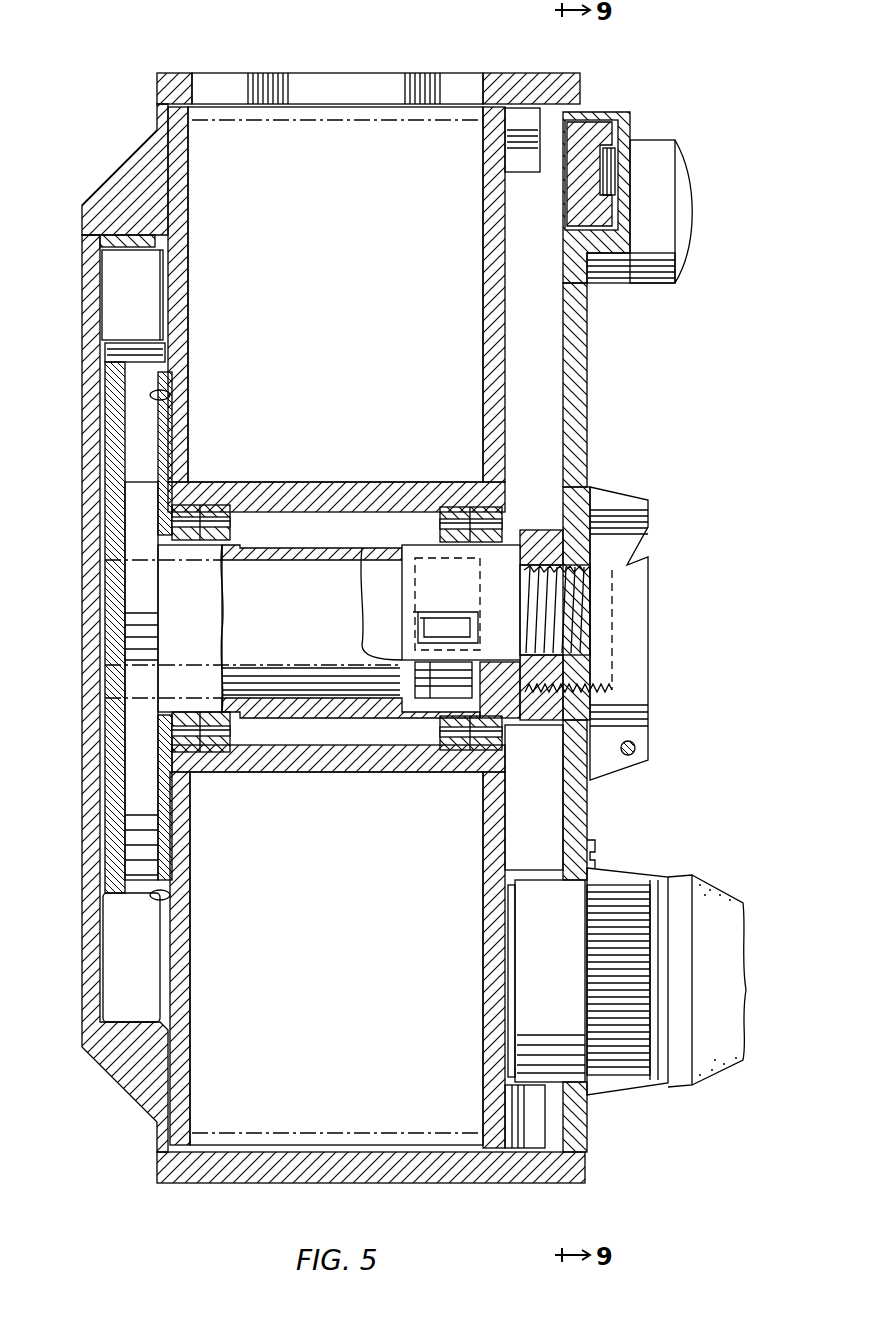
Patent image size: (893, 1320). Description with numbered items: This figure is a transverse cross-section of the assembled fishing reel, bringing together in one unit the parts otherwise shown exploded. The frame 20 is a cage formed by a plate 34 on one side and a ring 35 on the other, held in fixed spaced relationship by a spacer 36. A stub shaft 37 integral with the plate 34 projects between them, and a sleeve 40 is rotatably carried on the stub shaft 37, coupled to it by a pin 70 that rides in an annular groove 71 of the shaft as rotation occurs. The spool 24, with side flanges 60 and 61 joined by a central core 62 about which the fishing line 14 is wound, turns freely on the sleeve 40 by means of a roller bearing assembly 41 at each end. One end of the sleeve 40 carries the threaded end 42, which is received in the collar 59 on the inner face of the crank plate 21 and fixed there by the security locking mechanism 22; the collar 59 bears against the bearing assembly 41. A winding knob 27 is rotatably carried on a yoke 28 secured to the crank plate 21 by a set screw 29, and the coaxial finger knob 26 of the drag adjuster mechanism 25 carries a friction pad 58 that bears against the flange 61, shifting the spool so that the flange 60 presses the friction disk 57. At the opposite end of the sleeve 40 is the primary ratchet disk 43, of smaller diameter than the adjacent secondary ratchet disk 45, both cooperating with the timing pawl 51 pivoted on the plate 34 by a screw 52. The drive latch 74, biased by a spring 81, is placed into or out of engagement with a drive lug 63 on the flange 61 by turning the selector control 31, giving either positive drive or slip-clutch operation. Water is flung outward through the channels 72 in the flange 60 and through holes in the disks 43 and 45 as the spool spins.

The fishing line 14 is at (325, 125).
The frame 20 is at (130, 1098).
The crank plate 21 is at (598, 419).
The security locking mechanism 22 is at (665, 572).
The spool 24 is at (152, 128).
The drag adjuster mechanism 25 is at (676, 878).
The finger knob 26 is at (613, 888).
The winding knob 27 is at (715, 900).
The yoke 28 is at (645, 878).
The set screw 29 is at (593, 855).
The selector control screw 31 is at (690, 182).
The plate 34 is at (125, 245).
The ring 35 is at (565, 1178).
The spacer 36 is at (388, 78).
The stub shaft 37 is at (310, 642).
The sleeve 40 is at (337, 714).
The roller bearing assembly 41 is at (214, 508).
The threaded end of sleeve 42 is at (578, 620).
The primary ratchet disk 43 is at (135, 499).
The secondary ratchet disk 45 is at (118, 438).
The timing pawl 51 is at (150, 355).
The screw 52 is at (165, 280).
The friction disk 57 is at (165, 418).
The friction pad 58 is at (512, 988).
The collar 59 is at (535, 738).
The side flange 60 is at (178, 106).
The side flange 61 is at (494, 115).
The central core 62 is at (280, 772).
The drive lugs 63 is at (520, 115).
The pin 70 is at (445, 640).
The annular groove 71 is at (440, 720).
The grooves or channels 72 is at (165, 396).
The drive latch 74 is at (598, 130).
The spring 81 is at (628, 165).